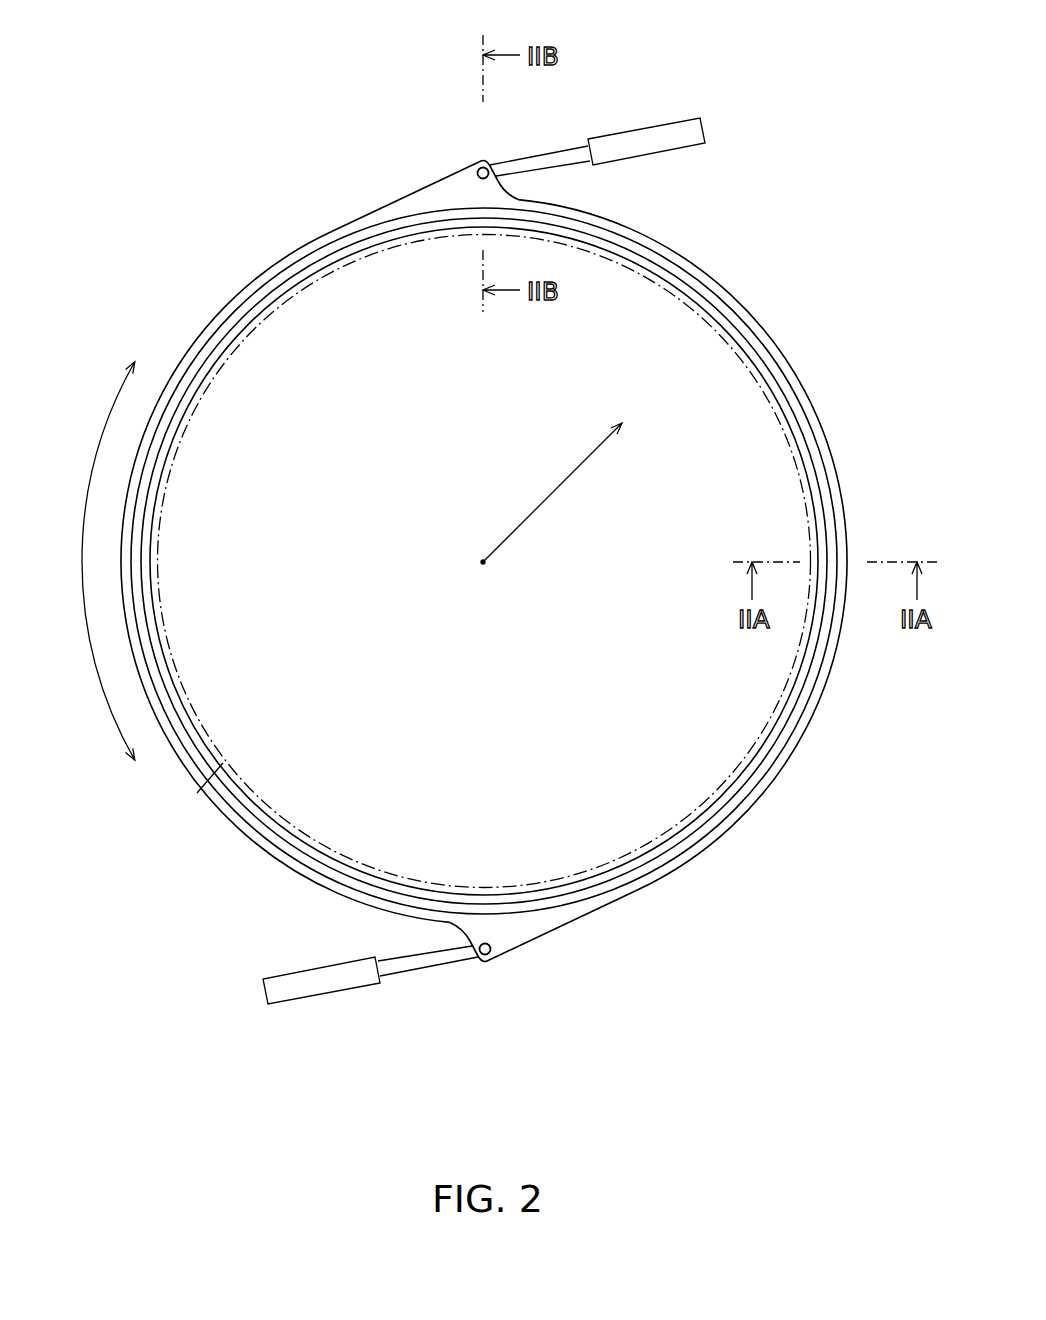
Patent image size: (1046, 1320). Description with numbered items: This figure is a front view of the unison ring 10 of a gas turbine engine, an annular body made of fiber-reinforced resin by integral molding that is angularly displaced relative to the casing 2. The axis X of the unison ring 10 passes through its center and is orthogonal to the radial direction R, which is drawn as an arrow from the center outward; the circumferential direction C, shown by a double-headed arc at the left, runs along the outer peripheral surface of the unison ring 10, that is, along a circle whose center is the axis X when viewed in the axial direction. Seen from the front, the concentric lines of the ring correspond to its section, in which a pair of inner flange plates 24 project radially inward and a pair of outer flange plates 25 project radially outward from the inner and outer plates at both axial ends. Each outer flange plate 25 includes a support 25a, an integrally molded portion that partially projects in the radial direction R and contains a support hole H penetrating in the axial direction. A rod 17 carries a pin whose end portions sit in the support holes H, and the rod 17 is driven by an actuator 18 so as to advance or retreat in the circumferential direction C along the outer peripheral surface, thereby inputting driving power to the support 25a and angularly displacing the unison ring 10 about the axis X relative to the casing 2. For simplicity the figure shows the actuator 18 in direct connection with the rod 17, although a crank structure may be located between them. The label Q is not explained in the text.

The casing 2 is at (197, 793).
The unison ring 10 is at (228, 302).
The rod 17 is at (548, 152).
The actuator 18 is at (658, 122).
The inner flange plate 24 is at (680, 285).
The outer flange plate 25 is at (697, 270).
The support 25a is at (458, 183).
The support hole H is at (478, 168).
The outer circumferential line Q is at (777, 365).
The radial direction R is at (552, 492).
The axis X is at (483, 566).
The circumferential direction C is at (98, 561).